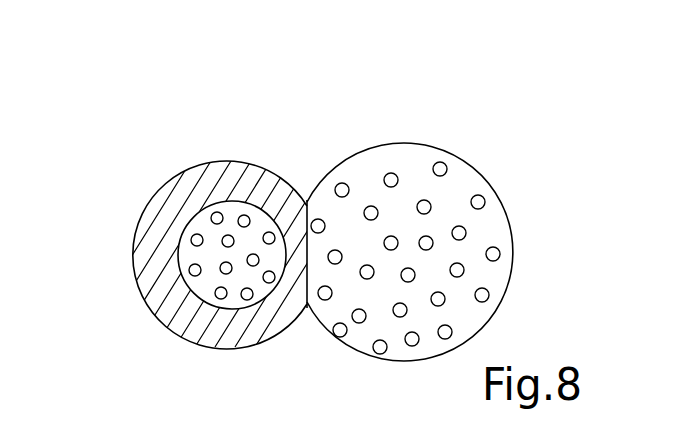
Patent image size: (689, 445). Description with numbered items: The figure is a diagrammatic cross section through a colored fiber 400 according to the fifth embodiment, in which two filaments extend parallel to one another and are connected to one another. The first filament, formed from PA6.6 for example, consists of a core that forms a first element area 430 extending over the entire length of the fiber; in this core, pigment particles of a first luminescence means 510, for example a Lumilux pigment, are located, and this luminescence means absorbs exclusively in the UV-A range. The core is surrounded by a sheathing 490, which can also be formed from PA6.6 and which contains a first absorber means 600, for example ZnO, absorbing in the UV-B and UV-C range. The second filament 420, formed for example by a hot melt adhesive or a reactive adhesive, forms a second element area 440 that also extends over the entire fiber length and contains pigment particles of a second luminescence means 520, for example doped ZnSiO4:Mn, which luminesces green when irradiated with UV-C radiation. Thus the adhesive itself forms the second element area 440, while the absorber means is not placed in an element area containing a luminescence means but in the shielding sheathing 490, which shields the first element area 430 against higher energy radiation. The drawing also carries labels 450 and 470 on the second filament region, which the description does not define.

The colored fiber 400 is at (363, 102).
The second filament 420 is at (462, 162).
The first element area 430 is at (184, 283).
The second element area 440 is at (511, 260).
The matrix body with channels 450 is at (410, 167).
The cladding layer 470 is at (173, 175).
The sheathing 490 is at (137, 238).
The first luminescence means 510 is at (214, 306).
The second luminescence means 520 is at (488, 197).
The first absorber means 600 is at (242, 165).